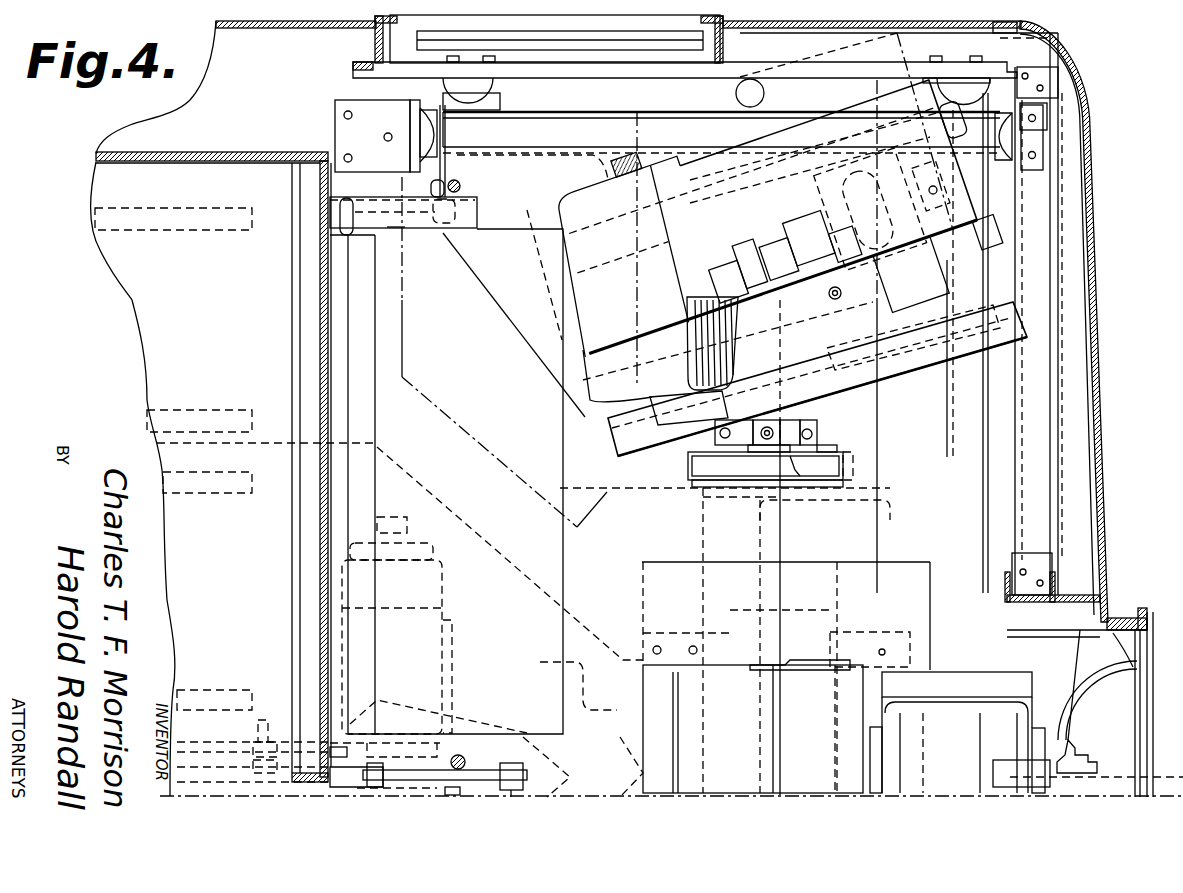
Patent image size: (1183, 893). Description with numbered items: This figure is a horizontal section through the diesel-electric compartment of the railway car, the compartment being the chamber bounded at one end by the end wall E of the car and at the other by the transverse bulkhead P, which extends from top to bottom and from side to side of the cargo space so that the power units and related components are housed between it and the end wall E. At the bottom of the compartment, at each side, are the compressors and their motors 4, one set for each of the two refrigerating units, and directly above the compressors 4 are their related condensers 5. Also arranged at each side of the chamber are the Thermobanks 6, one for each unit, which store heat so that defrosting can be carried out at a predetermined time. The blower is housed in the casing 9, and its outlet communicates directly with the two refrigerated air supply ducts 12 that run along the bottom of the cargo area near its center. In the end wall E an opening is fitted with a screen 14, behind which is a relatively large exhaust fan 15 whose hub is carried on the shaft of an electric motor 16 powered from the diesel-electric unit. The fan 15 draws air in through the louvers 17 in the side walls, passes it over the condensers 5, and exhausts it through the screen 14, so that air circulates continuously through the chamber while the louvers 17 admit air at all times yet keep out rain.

The transverse bulkhead P is at (322, 286).
The end wall E is at (1096, 397).
The compressors and their motors 4 is at (581, 388).
The condensers 5 is at (787, 218).
The Thermobank 6 is at (893, 62).
The blower casing 9 is at (820, 733).
The refrigerated air supply ducts 12 is at (498, 596).
The screen 14 is at (1147, 673).
The exhaust fan 15 is at (1096, 660).
The electric motor 16 is at (975, 750).
The louvers 17 is at (557, 33).